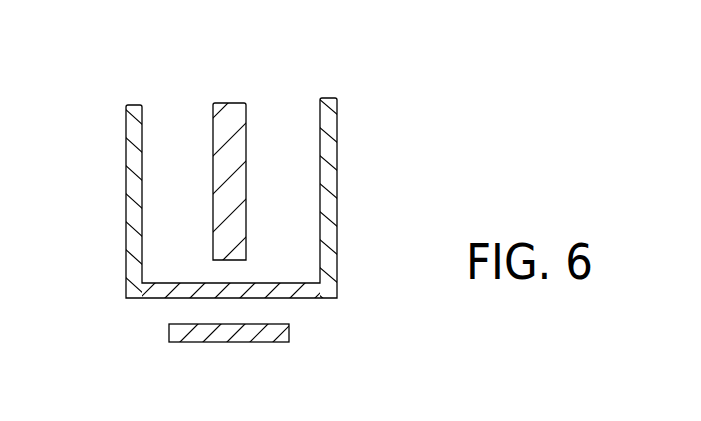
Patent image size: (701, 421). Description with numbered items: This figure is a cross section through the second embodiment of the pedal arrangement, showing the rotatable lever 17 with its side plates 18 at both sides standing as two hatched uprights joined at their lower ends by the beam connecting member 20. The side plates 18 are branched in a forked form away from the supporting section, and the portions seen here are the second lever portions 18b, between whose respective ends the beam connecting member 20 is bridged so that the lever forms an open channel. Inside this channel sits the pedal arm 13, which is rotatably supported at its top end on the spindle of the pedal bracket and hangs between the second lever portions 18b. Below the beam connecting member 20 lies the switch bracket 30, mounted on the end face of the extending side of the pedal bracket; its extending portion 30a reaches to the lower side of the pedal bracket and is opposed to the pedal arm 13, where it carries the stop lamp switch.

The pedal arm 13 is at (237, 103).
The rotatable lever 17 is at (338, 124).
The side plates 18 is at (126, 165).
The second lever portions 18b is at (126, 226).
The beam connecting member 20 is at (300, 298).
The switch bracket 30 is at (180, 345).
The extending portion 30a is at (228, 337).